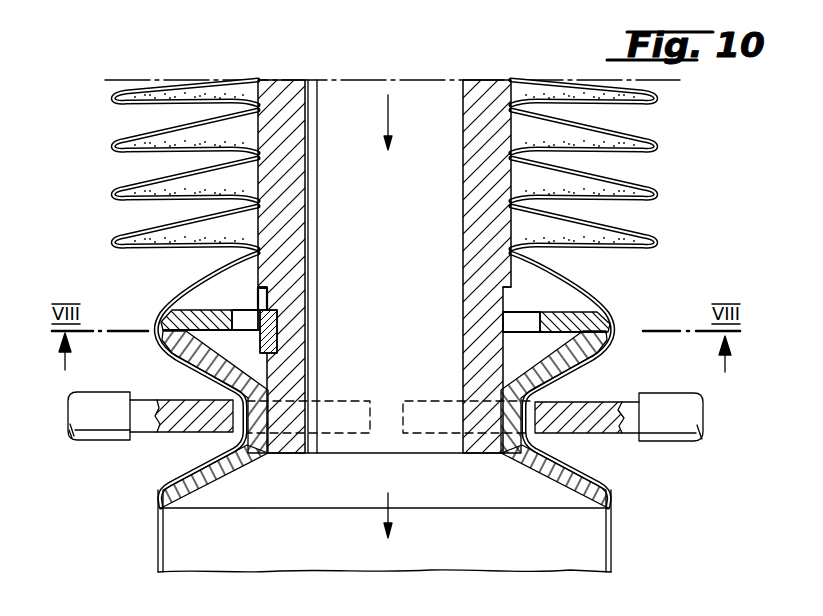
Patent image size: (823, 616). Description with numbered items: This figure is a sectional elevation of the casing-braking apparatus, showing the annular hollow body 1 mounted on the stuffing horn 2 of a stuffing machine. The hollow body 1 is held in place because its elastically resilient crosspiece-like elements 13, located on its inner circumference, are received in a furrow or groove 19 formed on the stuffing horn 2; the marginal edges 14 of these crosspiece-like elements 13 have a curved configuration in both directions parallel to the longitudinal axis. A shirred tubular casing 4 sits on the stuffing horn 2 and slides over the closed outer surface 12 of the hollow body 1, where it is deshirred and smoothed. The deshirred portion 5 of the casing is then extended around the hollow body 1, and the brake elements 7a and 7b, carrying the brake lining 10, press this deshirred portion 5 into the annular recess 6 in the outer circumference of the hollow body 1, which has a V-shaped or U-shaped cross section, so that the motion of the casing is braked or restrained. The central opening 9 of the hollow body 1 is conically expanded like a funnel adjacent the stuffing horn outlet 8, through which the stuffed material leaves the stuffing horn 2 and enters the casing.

The annular hollow body 1 is at (578, 309).
The stuffing horn 2 is at (493, 106).
The shirred tubular casing 4 is at (650, 186).
The deshirred portion 5 is at (615, 550).
The recess 6 is at (182, 380).
The brake 7a is at (677, 433).
The brake 7b is at (97, 430).
The stuffing horn outlet 8 is at (353, 442).
The central opening 9 is at (476, 498).
The brake lining 10 is at (240, 435).
The outer surface 12 is at (158, 488).
The crosspiece-like elements 13 is at (247, 298).
The marginal edges 14 is at (257, 283).
The groove 19 is at (276, 330).